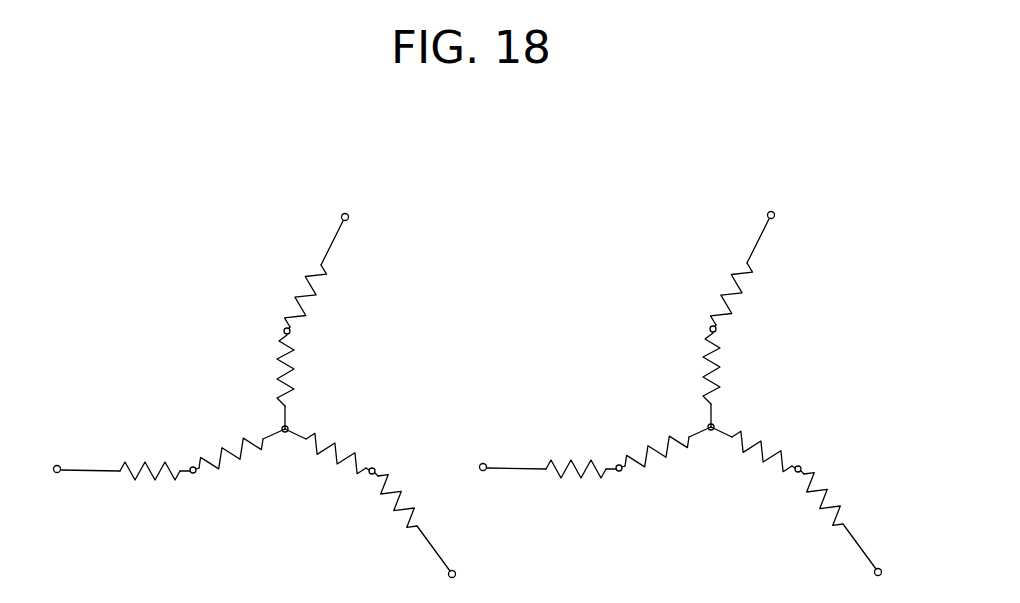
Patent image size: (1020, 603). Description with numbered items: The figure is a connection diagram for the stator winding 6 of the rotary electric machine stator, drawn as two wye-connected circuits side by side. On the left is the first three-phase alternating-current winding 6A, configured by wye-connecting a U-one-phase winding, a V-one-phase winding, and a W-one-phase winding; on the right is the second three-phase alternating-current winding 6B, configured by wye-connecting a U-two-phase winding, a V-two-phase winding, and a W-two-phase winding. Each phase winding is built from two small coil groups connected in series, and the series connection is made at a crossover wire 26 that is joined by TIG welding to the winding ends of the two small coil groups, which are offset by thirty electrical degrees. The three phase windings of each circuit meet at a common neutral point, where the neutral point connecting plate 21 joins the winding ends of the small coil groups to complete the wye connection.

The stator winding 6 is at (464, 155).
The first three-phase alternating-current winding 6A is at (263, 252).
The second three-phase alternating-current winding 6B is at (706, 239).
The neutral point connecting plate 21 is at (281, 427).
The crossover wire 26 is at (296, 333).